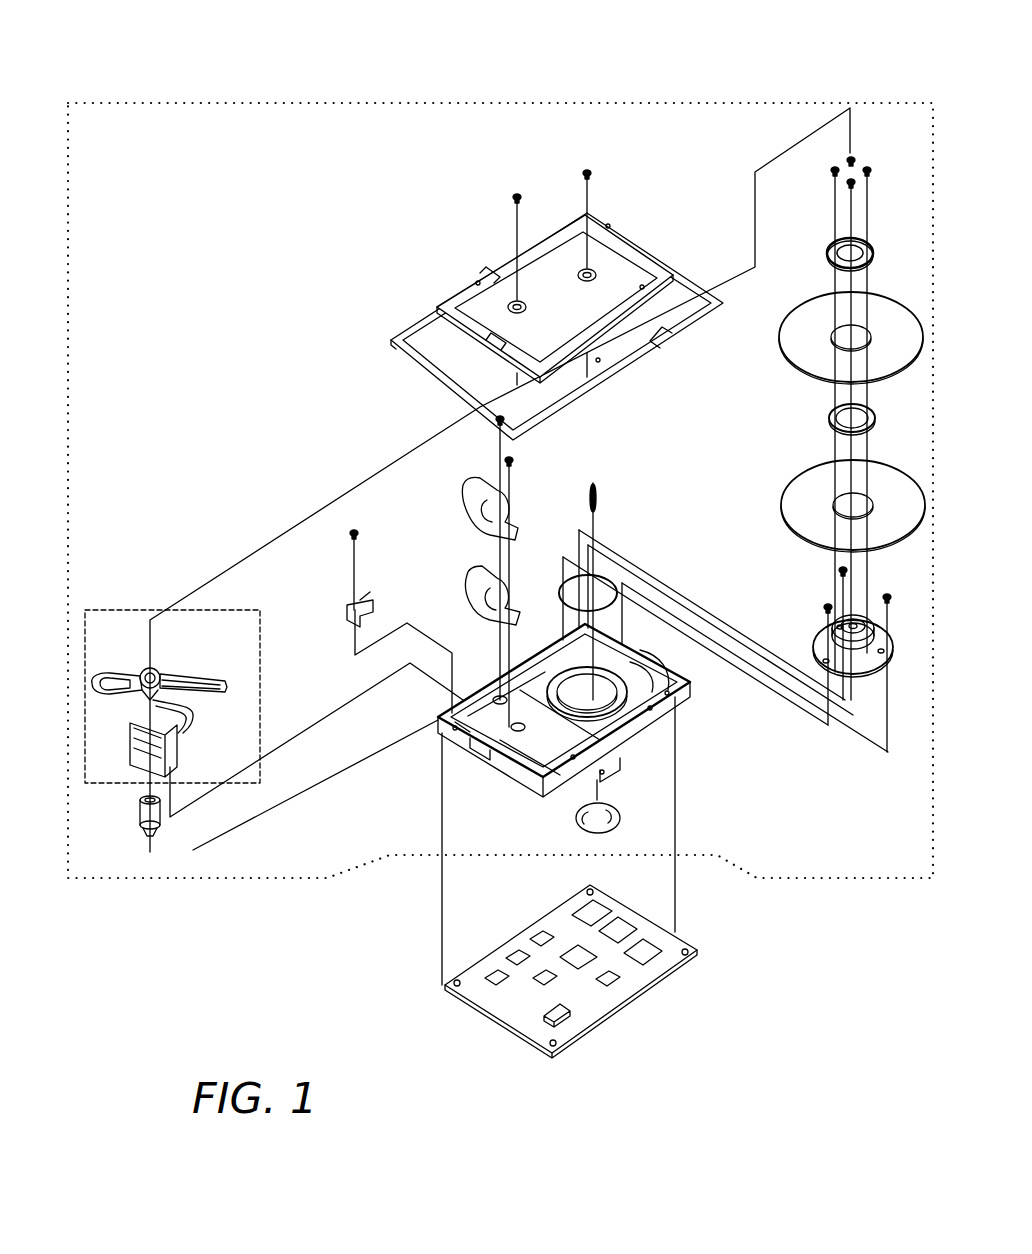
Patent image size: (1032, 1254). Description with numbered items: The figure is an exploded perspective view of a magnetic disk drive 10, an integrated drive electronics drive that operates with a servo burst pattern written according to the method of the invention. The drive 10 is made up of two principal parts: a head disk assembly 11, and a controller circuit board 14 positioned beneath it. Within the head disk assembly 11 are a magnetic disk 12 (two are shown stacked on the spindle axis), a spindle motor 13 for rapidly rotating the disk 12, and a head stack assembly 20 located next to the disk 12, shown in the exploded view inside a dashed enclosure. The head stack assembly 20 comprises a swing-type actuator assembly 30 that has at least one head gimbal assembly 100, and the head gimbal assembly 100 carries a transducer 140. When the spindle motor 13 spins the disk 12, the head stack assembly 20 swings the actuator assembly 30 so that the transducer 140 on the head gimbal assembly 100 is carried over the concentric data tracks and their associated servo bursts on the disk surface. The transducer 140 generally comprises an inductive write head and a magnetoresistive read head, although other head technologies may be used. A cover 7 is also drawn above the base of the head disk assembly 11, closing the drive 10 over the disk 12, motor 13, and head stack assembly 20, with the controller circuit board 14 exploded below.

The magnetic disk drive 10 is at (307, 72).
The cover 7 is at (462, 285).
The head disk assembly 11 is at (780, 880).
The magnetic disk 12 is at (793, 363).
The spindle motor 13 is at (823, 633).
The controller circuit board 14 is at (620, 1012).
The head stack assembly 20 is at (172, 681).
The swing-type actuator assembly 30 is at (93, 672).
The head gimbal assembly 100 is at (210, 678).
The transducer 140 is at (220, 697).